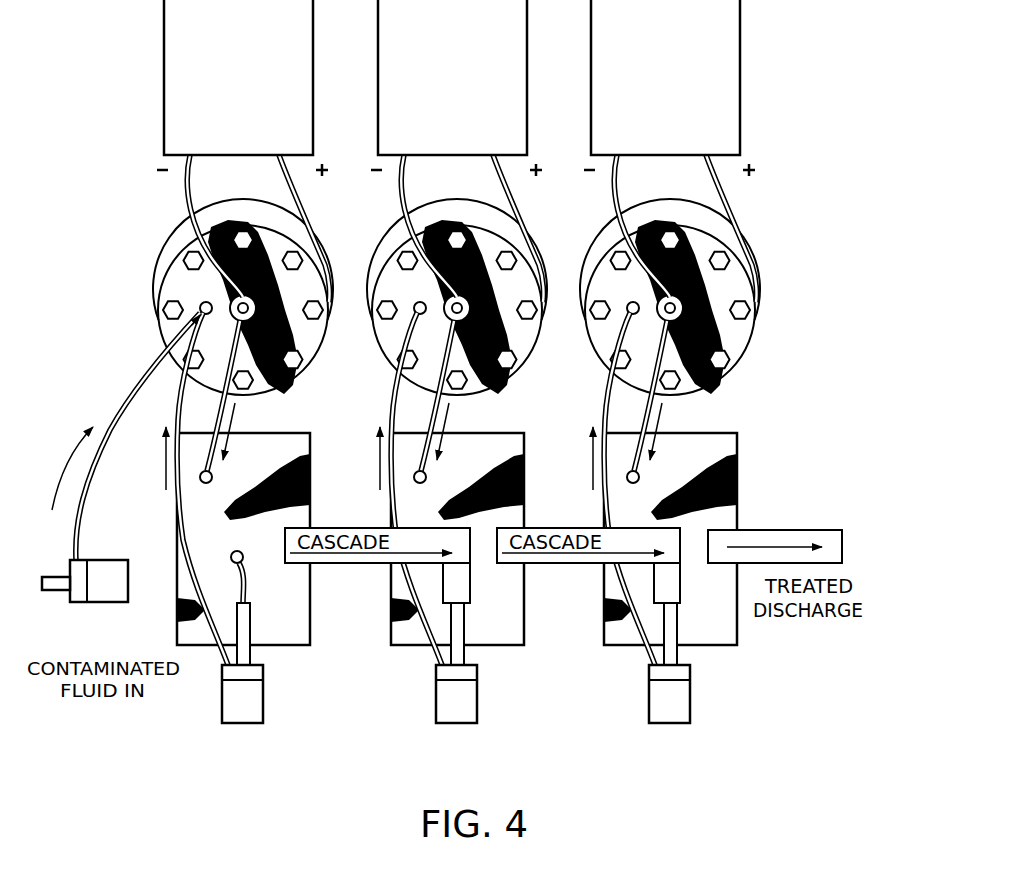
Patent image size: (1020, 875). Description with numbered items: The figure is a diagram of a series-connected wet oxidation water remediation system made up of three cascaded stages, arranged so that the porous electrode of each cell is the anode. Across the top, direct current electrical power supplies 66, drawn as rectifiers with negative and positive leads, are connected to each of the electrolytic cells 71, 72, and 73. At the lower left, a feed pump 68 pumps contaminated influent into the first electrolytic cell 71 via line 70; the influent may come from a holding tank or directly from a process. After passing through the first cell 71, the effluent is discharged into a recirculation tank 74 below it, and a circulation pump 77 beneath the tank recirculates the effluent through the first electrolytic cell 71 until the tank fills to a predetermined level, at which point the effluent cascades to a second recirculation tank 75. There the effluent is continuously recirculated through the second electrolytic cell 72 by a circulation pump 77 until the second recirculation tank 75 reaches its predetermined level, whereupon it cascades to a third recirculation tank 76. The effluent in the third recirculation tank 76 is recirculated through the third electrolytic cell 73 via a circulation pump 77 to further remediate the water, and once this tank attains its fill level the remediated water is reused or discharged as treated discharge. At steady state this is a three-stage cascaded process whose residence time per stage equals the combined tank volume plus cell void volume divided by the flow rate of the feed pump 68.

The direct current electrical power supply 66 is at (249, 38).
The feed pump 68 is at (88, 560).
The line 70 is at (147, 384).
The first electrolytic cell 71 is at (293, 386).
The second electrolytic cell 72 is at (459, 279).
The third electrolytic cell 73 is at (672, 279).
The recirculation tank 74 is at (310, 612).
The second recirculation tank 75 is at (479, 485).
The third recirculation tank 76 is at (692, 485).
The circulation pump 77 is at (263, 700).